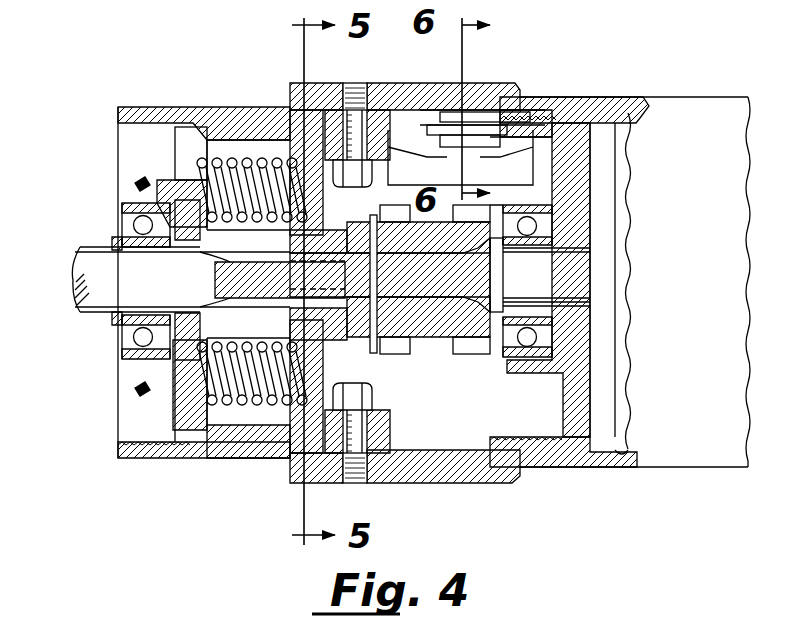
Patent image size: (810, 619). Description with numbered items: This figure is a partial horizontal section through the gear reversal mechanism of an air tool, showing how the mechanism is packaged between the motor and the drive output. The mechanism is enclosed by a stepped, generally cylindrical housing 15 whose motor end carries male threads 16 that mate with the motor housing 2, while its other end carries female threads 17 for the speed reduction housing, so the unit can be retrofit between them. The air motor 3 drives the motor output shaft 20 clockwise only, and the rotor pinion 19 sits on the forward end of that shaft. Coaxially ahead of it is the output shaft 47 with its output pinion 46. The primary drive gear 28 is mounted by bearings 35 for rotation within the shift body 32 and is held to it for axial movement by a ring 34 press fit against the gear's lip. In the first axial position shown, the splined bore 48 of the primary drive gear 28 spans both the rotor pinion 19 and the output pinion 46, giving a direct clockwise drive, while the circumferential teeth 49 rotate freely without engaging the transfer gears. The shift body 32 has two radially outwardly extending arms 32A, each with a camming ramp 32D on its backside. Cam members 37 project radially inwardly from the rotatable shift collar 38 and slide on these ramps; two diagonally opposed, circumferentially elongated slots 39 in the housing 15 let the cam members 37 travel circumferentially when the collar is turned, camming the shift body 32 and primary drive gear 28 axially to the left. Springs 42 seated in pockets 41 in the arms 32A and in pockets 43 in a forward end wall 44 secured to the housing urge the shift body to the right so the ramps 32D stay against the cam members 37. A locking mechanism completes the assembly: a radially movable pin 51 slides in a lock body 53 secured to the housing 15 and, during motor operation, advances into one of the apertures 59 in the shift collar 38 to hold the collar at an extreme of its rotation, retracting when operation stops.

The motor housing 2 is at (624, 462).
The air motor 3 is at (630, 440).
The housing 15 is at (555, 93).
The male threads 16 is at (541, 441).
The female threads 17 is at (122, 446).
The rotor pinion 19 is at (440, 304).
The motor output shaft 20 is at (575, 279).
The primary drive gear 28 is at (375, 335).
The shift body 32 is at (300, 226).
The arms 32A is at (292, 162).
The camming ramp 32D is at (296, 100).
The ring 34 is at (298, 330).
The bearings 35 is at (282, 315).
The cam members 37 is at (355, 120).
The shift collar 38 is at (433, 477).
The slots 39 is at (323, 110).
The pockets 41 is at (290, 122).
The springs 42 is at (200, 150).
The pockets 43 is at (195, 178).
The forward end wall 44 is at (192, 140).
The output pinion 46 is at (205, 284).
The output shaft 47 is at (93, 316).
The splined bore 48 is at (340, 292).
The circumferential teeth 49 is at (365, 350).
The pin 51 is at (476, 110).
The lock body 53 is at (512, 152).
The apertures 59 is at (457, 82).